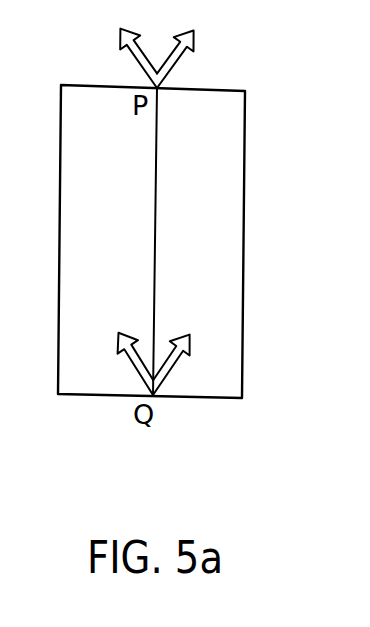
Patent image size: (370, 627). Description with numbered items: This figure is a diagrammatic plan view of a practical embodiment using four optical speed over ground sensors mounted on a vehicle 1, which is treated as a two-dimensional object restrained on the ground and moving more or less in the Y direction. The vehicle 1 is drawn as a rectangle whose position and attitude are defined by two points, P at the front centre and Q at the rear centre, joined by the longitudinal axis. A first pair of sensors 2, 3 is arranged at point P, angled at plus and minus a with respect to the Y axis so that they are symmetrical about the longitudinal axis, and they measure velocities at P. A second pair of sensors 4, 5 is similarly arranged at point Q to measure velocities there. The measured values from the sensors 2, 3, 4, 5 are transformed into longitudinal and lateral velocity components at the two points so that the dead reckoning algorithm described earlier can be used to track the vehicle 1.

The vehicle 1 is at (243, 242).
The sensor of first pair 2 is at (122, 53).
The sensor of first pair 3 is at (187, 63).
The sensor of second pair 4 is at (131, 371).
The sensor of second pair 5 is at (174, 372).